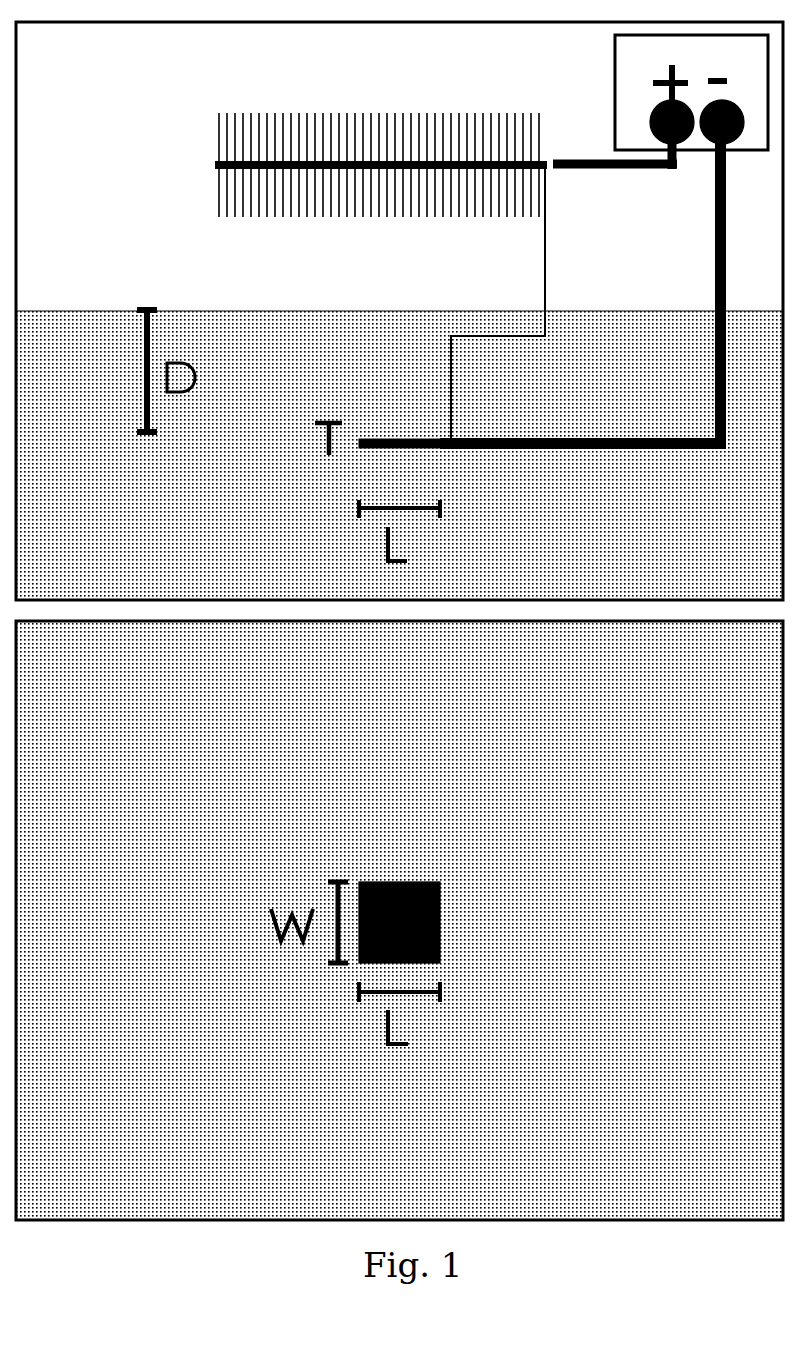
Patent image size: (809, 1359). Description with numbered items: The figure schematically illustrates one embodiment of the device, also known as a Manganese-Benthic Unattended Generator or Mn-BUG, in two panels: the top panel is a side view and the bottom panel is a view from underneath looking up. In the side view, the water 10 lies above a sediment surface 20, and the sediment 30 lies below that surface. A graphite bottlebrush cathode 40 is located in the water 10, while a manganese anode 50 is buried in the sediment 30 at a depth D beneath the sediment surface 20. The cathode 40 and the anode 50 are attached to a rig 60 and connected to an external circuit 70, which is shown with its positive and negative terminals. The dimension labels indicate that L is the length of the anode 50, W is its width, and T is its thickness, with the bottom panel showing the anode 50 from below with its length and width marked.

The water 10 is at (399, 311).
The sediment surface 20 is at (399, 315).
The sediment 30 is at (399, 765).
The graphite bottlebrush cathode 40 is at (360, 165).
The manganese anode 50 is at (403, 671).
The rig 60 is at (524, 302).
The external circuit 70 is at (604, 242).